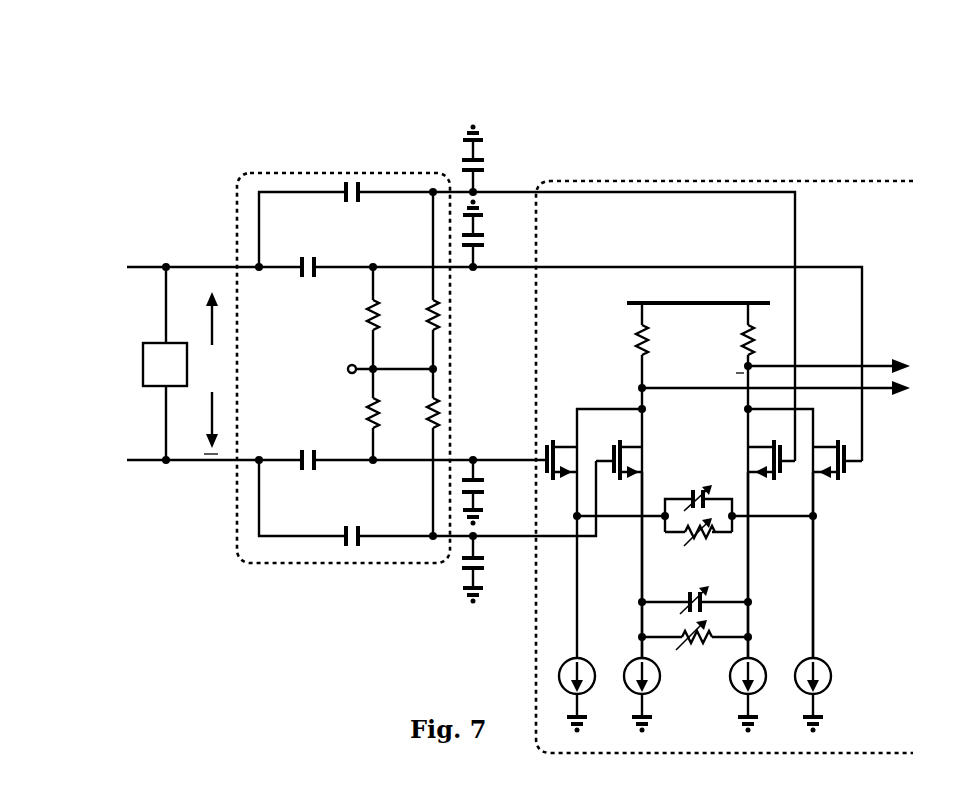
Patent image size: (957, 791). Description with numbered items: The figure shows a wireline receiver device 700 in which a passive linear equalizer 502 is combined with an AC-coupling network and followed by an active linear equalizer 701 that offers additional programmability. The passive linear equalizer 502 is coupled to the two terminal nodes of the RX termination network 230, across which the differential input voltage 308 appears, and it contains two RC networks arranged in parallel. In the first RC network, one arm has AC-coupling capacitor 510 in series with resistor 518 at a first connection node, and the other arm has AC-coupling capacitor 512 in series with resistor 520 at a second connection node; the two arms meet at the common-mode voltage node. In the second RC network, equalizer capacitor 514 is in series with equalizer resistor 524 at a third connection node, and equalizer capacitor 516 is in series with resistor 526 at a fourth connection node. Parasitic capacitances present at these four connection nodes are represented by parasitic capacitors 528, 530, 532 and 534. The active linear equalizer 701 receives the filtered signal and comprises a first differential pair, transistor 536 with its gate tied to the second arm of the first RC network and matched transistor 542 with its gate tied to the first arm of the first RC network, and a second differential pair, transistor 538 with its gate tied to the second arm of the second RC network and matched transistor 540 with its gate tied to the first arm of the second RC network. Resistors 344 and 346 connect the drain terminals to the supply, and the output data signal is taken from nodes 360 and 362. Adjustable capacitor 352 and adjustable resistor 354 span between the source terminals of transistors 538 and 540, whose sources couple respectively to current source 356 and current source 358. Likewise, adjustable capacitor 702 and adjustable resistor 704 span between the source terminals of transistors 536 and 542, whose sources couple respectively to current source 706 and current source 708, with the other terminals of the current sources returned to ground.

The wireline receiver device 700 is at (166, 88).
The RX termination network 230 is at (143, 350).
The input voltage Vin 308 is at (215, 365).
The AC-coupling capacitor 510 is at (301, 271).
The AC-coupling capacitor 512 is at (301, 460).
The equalizer capacitor 514 is at (527, 305).
The equalizer capacitor 516 is at (427, 503).
The resistor 518 is at (377, 324).
The resistor 520 is at (346, 414).
The equalizer resistor 524 is at (418, 280).
The resistor 526 is at (418, 452).
The parasitic capacitor 528 is at (491, 159).
The parasitic capacitor 530 is at (491, 247).
The parasitic capacitor 532 is at (491, 493).
The parasitic capacitor 534 is at (491, 570).
The passive linear equalizer 502 is at (350, 392).
The active linear equalizer 701 is at (724, 455).
The resistor 344 is at (698, 365).
The resistor 346 is at (765, 375).
The node 360 is at (743, 406).
The node 362 is at (823, 403).
The transistor 536 is at (562, 438).
The transistor 538 is at (660, 458).
The transistor 540 is at (736, 460).
The transistor 542 is at (852, 478).
The adjustable capacitor 702 is at (695, 499).
The adjustable resistor 704 is at (703, 542).
The adjustable capacitor 352 is at (695, 593).
The adjustable resistor 354 is at (695, 653).
The current source 356 is at (630, 665).
The current source 358 is at (764, 668).
The current source 706 is at (565, 665).
The current source 708 is at (829, 664).